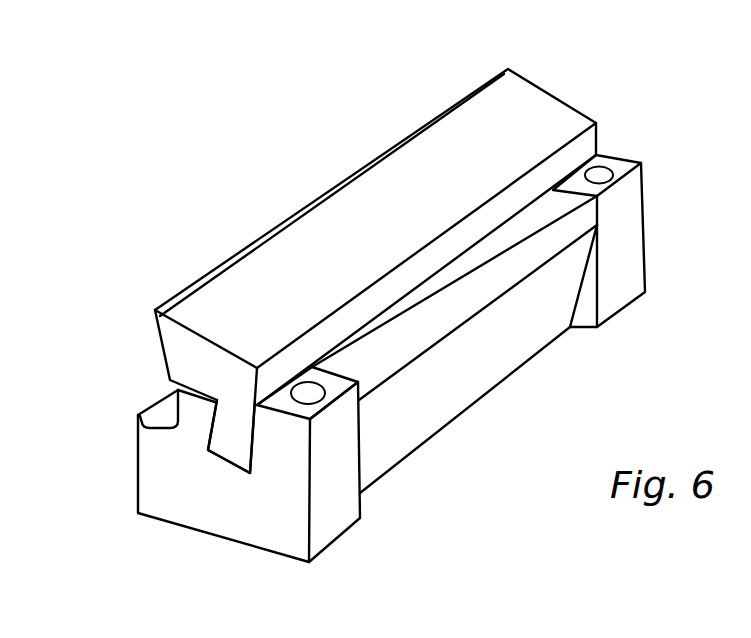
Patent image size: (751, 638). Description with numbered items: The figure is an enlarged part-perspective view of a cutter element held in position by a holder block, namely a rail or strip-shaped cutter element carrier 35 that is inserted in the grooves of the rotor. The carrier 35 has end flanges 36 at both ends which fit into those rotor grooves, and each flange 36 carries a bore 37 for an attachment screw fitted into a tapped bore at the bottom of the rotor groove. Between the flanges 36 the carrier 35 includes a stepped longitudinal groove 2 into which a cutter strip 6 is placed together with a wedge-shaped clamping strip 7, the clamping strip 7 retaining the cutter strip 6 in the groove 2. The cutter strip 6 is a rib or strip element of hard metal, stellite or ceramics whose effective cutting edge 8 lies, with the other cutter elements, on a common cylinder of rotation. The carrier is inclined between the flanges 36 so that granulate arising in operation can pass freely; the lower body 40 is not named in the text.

The longitudinal groove 2 is at (207, 420).
The cutter strip 6 is at (523, 105).
The clamping strip 7 is at (470, 255).
The cutting edge 8 is at (390, 143).
The cutter element carrier 35 is at (634, 124).
The end flange 36 is at (618, 282).
The bore 37 is at (600, 175).
The base 40 is at (483, 370).